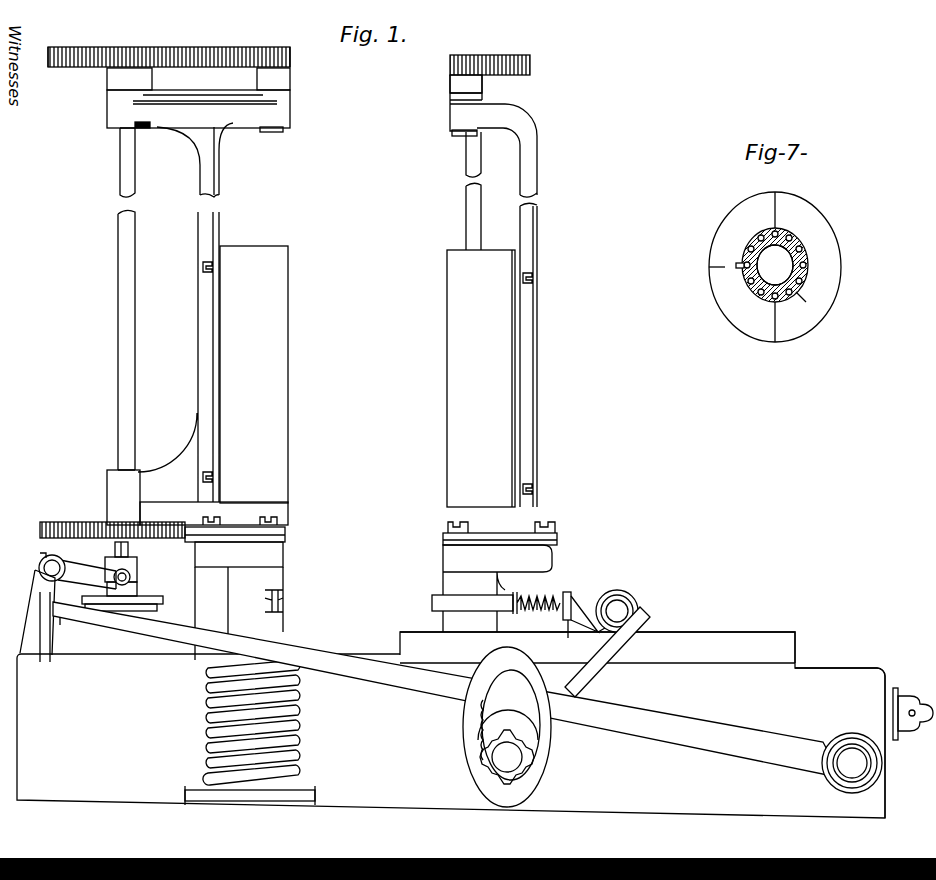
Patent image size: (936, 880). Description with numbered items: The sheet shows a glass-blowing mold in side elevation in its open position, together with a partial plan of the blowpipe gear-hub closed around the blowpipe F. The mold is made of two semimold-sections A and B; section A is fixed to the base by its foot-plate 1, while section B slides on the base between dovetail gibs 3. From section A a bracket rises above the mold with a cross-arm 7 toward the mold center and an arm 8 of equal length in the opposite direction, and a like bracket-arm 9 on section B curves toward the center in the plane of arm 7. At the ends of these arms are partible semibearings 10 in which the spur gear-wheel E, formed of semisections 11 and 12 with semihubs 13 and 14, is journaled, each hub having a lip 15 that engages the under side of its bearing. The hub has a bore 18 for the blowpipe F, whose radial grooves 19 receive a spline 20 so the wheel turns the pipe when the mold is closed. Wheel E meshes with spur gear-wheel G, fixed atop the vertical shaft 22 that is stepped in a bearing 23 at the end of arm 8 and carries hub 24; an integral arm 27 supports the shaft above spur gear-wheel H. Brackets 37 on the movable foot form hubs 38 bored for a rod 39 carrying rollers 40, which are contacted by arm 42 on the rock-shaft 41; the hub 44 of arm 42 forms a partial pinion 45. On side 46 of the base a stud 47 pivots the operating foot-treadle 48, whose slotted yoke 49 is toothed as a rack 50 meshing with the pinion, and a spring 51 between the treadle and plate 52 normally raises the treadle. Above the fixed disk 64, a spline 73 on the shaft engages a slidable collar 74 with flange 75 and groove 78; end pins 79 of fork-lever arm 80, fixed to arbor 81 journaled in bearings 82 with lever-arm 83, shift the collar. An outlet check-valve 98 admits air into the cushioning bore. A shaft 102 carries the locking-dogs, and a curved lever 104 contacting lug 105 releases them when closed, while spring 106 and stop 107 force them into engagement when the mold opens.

In FIG. 1, the foot-plate 1 is at (140, 643).
In FIG. 1, the dovetail gibs 3 is at (709, 645).
In FIG. 1, the cross-arm 7 is at (229, 135).
In FIG. 1, the arm 8 is at (163, 118).
In FIG. 1, the bracket-arm 9 is at (537, 320).
In FIG. 1, the semibearing 10 is at (278, 118).
In FIG. 1, the semisection of spur gear-wheel 11 is at (231, 58).
In FIG. 7, the semisection of spur gear-wheel 11 is at (710, 259).
In FIG. 1, the semisection of spur gear-wheel 12 is at (484, 62).
In FIG. 7, the semisection of spur gear-wheel 12 is at (840, 262).
In FIG. 1, the semihub 13 is at (283, 78).
In FIG. 1, the semihub 14 is at (458, 84).
In FIG. 1, the lip 15 is at (272, 132).
In FIG. 7, the bore 18 is at (760, 236).
In FIG. 7, the radial grooves 19 is at (796, 292).
In FIG. 7, the spline 20 is at (737, 270).
In FIG. 1, the vertical shaft 22 is at (118, 315).
In FIG. 1, the bearing 23 is at (107, 112).
In FIG. 1, the hub 24 is at (107, 82).
In FIG. 1, the integral arm 27 is at (162, 478).
In FIG. 1, the brackets 37 is at (585, 634).
In FIG. 1, the hub 38 is at (625, 594).
In FIG. 1, the rod 39 is at (610, 600).
In FIG. 1, the roller 40 is at (636, 600).
In FIG. 1, the rock-shaft 41 is at (528, 770).
In FIG. 1, the arm 42 is at (632, 649).
In FIG. 1, the hub 44 is at (516, 715).
In FIG. 1, the partial pinion 45 is at (480, 762).
In FIG. 1, the side of the base 46 is at (818, 676).
In FIG. 1, the stud 47 is at (882, 776).
In FIG. 1, the operating foot-treadle 48 is at (134, 607).
In FIG. 1, the slotted yoke 49 is at (528, 690).
In FIG. 1, the rack 50 is at (480, 735).
In FIG. 1, the spring 51 is at (302, 722).
In FIG. 1, the plate 52 is at (185, 795).
In FIG. 1, the fixed disk 64 is at (190, 622).
In FIG. 1, the spline 73 is at (131, 553).
In FIG. 1, the collar 74 is at (140, 567).
In FIG. 1, the flange 75 is at (162, 598).
In FIG. 1, the groove 78 is at (132, 580).
In FIG. 1, the end pins 79 is at (110, 572).
In FIG. 1, the fork-lever arm 80 is at (83, 566).
In FIG. 1, the arbor 81 is at (39, 565).
In FIG. 1, the bearings 82 is at (36, 598).
In FIG. 1, the lever-arm 83 is at (45, 648).
In FIG. 1, the outlet check-valve 98 is at (908, 688).
In FIG. 1, the shaft 102 is at (466, 215).
In FIG. 1, the curved lever 104 is at (432, 603).
In FIG. 1, the lug 105 is at (284, 600).
In FIG. 1, the spring 106 is at (543, 596).
In FIG. 1, the stop 107 is at (577, 605).
In FIG. 1, the mold-section A is at (258, 255).
In FIG. 1, the mold-section B is at (447, 270).
In FIG. 1, the spur gear-wheel E is at (258, 58).
In FIG. 7, the blowpipe F is at (785, 255).
In FIG. 1, the spur gear-wheel G is at (87, 55).
In FIG. 1, the spur gear-wheel H is at (76, 522).